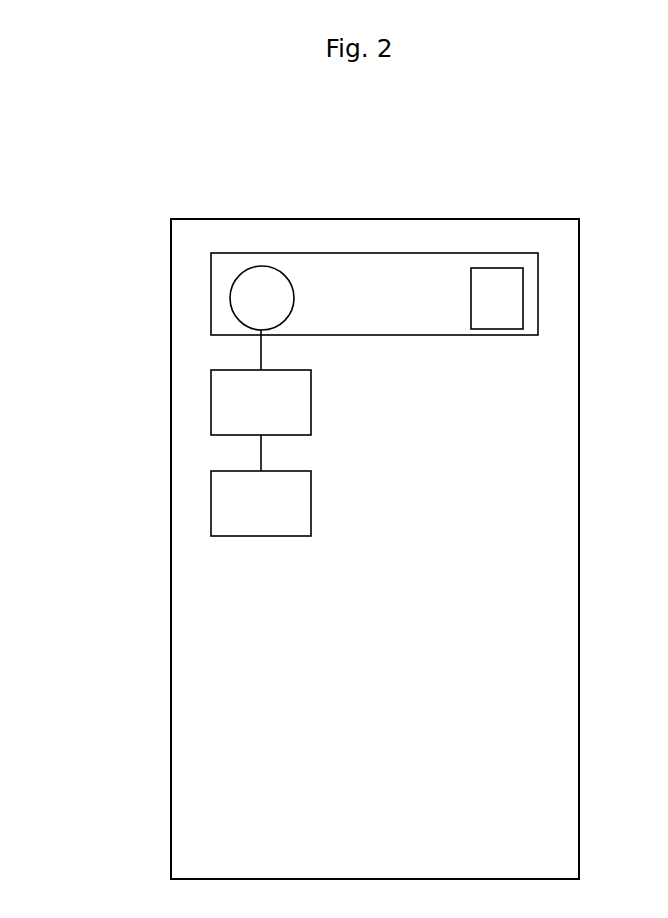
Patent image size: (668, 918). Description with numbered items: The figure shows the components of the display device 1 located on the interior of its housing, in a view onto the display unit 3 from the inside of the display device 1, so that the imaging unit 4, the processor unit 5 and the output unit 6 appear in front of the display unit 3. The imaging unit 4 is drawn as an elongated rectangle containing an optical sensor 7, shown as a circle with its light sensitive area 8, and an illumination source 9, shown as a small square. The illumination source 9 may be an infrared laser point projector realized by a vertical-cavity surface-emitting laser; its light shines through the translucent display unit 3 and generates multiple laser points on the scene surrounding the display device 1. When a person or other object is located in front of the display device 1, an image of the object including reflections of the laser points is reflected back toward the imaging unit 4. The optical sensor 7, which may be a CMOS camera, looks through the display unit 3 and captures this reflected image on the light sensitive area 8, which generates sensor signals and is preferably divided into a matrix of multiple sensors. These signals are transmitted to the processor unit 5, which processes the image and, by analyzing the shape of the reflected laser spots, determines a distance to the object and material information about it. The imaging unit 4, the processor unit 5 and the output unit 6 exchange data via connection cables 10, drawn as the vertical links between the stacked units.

The display device 1 is at (622, 226).
The display unit 3 is at (579, 300).
The imaging unit 4 is at (262, 253).
The processor unit 5 is at (211, 414).
The output unit 6 is at (211, 506).
The optical sensor 7 is at (230, 297).
The light sensitive area 8 is at (255, 311).
The illumination source 9 is at (482, 268).
The connection cables 10 is at (261, 360).